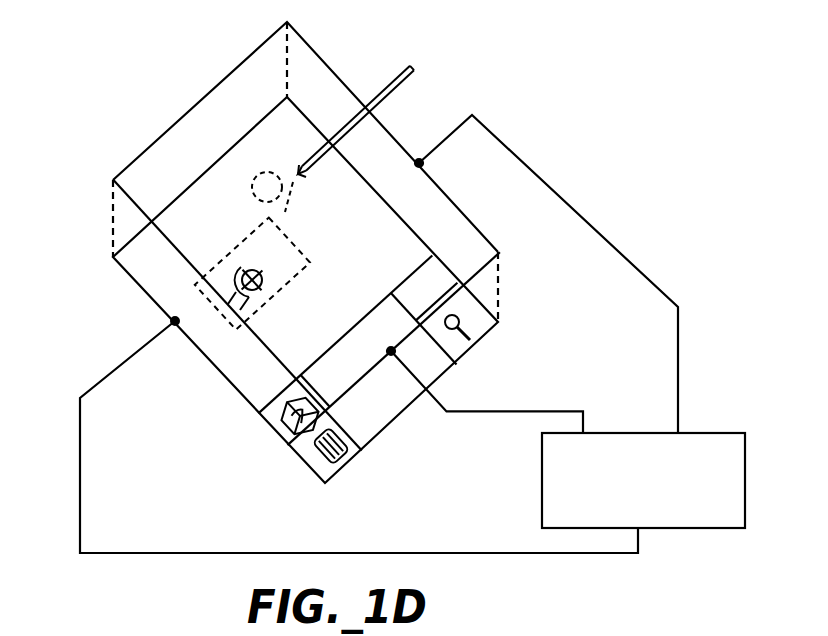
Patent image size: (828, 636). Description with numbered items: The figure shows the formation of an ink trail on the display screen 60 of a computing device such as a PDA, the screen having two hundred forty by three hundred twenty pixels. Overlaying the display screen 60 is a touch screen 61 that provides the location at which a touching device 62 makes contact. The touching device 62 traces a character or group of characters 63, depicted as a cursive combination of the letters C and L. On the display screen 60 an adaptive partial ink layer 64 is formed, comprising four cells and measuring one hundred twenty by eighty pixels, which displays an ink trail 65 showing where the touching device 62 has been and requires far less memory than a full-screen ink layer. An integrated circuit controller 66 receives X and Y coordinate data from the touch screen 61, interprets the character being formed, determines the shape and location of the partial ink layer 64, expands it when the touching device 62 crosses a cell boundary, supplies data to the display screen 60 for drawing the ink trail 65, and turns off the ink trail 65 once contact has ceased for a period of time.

The display screen 60 is at (228, 383).
The touch screen 61 is at (327, 62).
The touching device 62 is at (416, 69).
The character or group of characters 63 is at (250, 185).
The adaptive partial ink layer 64 is at (196, 287).
The ink trail 65 is at (247, 295).
The integrated circuit controller 66 is at (542, 460).